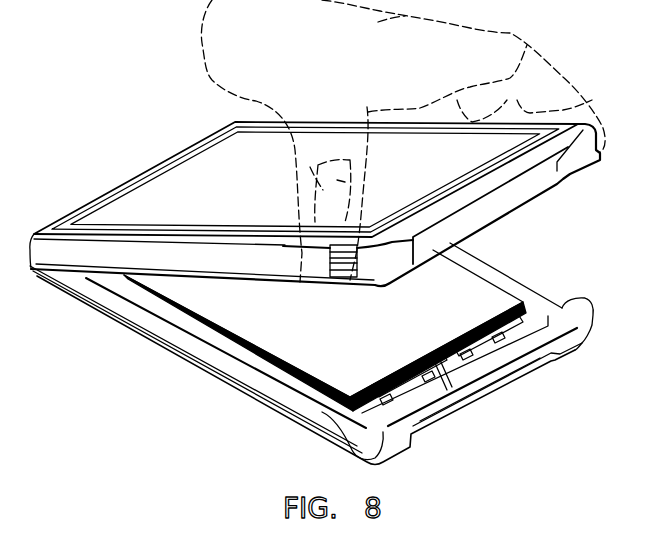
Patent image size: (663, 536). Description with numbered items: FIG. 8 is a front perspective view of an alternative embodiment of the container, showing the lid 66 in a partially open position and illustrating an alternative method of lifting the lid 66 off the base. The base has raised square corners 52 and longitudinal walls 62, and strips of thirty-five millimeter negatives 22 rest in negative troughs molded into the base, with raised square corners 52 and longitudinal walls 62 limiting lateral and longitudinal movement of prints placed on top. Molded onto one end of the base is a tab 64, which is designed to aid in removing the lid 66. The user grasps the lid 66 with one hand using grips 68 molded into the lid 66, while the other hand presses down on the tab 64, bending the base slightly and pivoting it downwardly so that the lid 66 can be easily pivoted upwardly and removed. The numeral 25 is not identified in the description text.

The strips of 35 millimeter negatives 22 is at (507, 342).
The display panel 25 is at (450, 287).
The raised square corners 52 is at (577, 306).
The longitudinal walls 62 is at (207, 373).
The tab 64 is at (487, 407).
The lid 66 is at (245, 173).
The grips 68 is at (345, 255).